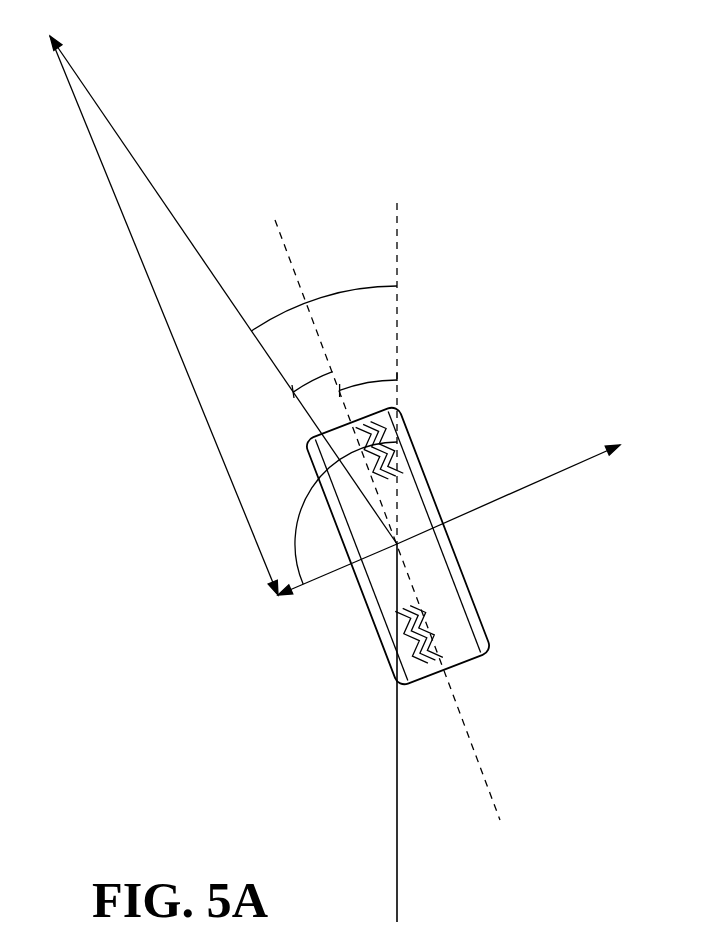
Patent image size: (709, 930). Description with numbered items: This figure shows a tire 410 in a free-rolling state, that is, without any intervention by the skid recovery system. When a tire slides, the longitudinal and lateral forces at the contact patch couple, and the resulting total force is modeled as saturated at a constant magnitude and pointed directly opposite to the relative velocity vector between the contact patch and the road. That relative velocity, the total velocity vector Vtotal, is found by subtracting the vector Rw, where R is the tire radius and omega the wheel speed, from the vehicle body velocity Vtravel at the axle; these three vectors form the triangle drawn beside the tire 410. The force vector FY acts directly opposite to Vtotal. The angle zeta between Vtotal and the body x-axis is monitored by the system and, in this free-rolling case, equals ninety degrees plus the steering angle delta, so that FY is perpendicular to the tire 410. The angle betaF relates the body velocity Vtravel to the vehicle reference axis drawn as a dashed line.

The tire 410 is at (481, 603).
The vehicle body velocity Vtravel is at (223, 290).
The Rω vector Rw is at (164, 315).
The total relative velocity vector Vtotal is at (327, 593).
The force vector FY is at (508, 494).
The front slip angle betaF is at (325, 289).
The steering angle delta is at (368, 372).
The angle ζ zeta is at (336, 513).